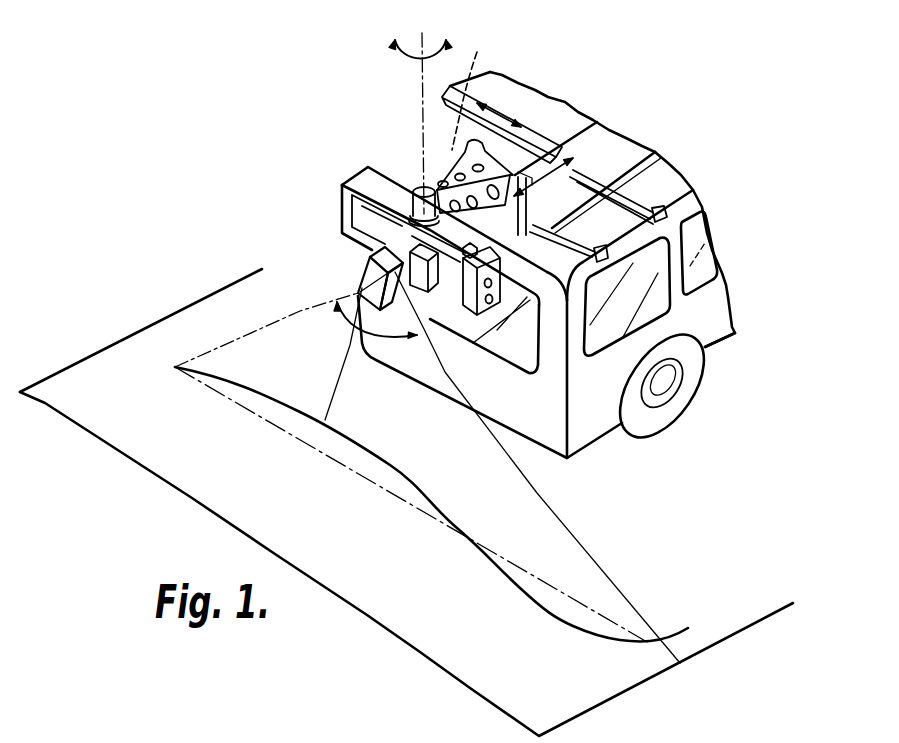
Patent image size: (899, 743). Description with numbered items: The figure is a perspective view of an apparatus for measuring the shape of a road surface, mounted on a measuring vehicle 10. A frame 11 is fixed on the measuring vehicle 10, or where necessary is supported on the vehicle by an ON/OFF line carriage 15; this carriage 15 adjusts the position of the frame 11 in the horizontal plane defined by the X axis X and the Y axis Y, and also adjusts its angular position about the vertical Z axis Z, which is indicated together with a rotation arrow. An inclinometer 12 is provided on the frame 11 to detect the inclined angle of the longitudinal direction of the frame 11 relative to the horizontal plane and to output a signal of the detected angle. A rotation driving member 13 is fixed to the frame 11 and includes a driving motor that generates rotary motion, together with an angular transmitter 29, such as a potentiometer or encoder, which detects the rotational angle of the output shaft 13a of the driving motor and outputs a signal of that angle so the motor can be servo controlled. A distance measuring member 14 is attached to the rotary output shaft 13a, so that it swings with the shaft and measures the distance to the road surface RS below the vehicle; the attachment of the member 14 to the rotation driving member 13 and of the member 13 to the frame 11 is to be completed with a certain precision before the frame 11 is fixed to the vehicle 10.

The measuring vehicle 10 is at (593, 442).
The frame 11 is at (366, 166).
The inclinometer 12 is at (455, 287).
The rotation driving member 13 is at (435, 283).
The output shaft 13a is at (350, 205).
The distance measuring member 14 is at (360, 262).
The ON/OFF line carriage 15 is at (512, 175).
The angular transmitter 29 is at (481, 91).
The road surface RS is at (575, 628).
The X axis X is at (554, 169).
The Y axis Y is at (548, 127).
The Z axis Z is at (420, 111).